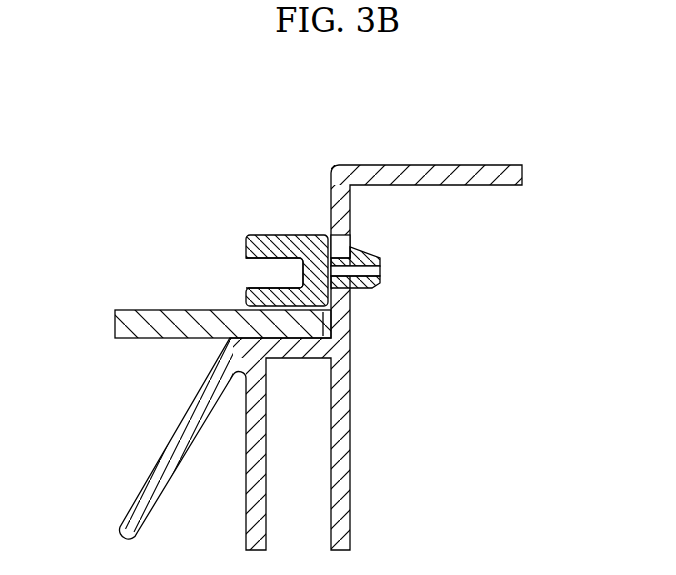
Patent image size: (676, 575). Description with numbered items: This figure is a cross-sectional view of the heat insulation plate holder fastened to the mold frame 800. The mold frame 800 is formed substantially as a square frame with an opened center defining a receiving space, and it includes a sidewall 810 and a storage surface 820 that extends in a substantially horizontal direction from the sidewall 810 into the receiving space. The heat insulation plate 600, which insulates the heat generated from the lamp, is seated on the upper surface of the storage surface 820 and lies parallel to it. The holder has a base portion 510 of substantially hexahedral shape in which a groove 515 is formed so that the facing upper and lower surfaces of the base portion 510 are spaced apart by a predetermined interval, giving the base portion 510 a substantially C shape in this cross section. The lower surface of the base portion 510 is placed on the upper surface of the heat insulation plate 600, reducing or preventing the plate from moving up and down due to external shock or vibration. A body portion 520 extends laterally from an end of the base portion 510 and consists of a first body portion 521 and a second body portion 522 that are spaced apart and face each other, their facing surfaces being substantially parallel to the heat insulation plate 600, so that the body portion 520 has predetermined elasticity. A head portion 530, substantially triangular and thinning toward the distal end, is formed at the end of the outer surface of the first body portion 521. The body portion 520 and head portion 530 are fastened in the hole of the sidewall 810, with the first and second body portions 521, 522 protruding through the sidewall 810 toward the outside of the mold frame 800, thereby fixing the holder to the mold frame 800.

The mold frame 800 is at (529, 146).
The sidewall 810 is at (350, 320).
The storage surface 820 is at (303, 348).
The heat insulation plate 600 is at (125, 322).
The base portion 510 is at (270, 236).
The groove 515 is at (256, 273).
The body portion 520 is at (459, 359).
The first body portion 521 is at (352, 236).
The second body portion 522 is at (356, 289).
The head portion 530 is at (353, 258).